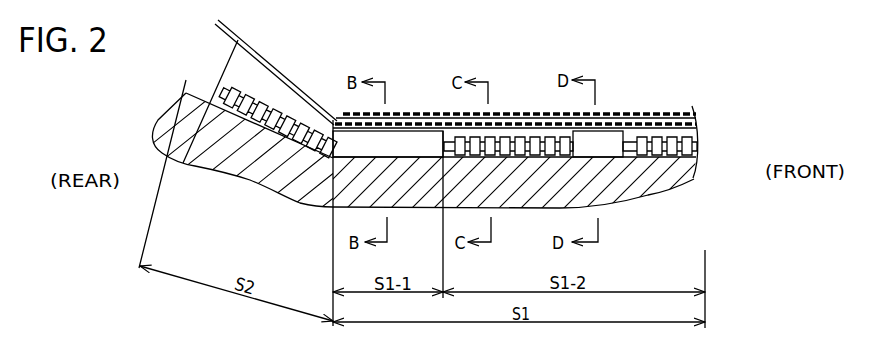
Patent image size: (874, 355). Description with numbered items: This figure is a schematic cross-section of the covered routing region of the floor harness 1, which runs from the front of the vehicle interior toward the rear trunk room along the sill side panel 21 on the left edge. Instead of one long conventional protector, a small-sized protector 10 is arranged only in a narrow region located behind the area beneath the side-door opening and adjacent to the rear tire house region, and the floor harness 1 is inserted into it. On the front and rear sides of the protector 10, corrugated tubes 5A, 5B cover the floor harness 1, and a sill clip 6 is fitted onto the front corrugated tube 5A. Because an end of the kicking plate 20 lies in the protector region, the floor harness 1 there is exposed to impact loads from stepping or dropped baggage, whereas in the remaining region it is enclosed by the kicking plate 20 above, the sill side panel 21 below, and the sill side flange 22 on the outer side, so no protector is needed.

The floor harness 1 is at (537, 133).
The corrugated tube 5A is at (507, 135).
The corrugated tube 5B is at (277, 112).
The sill clip 6 is at (615, 143).
The protector 10 is at (415, 148).
The kicking plate 20 is at (642, 113).
The sill side panel 21 is at (663, 168).
The sill side flange 22 is at (670, 122).